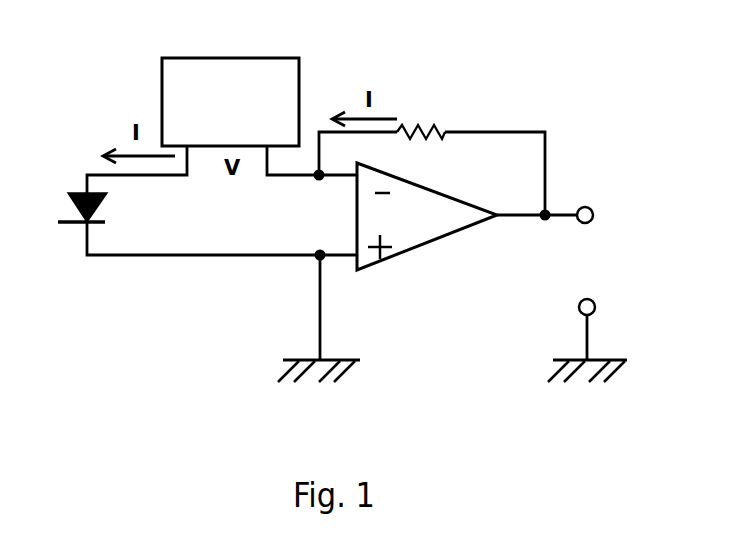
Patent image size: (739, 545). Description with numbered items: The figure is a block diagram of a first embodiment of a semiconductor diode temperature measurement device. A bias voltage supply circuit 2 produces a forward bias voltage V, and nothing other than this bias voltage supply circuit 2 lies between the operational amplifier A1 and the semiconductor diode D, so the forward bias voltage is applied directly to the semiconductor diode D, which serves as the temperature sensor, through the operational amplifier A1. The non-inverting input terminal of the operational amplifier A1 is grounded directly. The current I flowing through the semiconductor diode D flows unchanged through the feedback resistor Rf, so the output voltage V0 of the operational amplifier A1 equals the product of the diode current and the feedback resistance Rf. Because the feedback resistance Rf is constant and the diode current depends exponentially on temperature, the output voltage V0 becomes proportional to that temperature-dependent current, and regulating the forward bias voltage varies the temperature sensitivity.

The bias voltage supply circuit 2 is at (230, 82).
The feedback resistor Rf is at (421, 113).
The operational amplifier A1 is at (427, 216).
The semiconductor diode D is at (98, 208).
The output voltage V0 is at (580, 243).